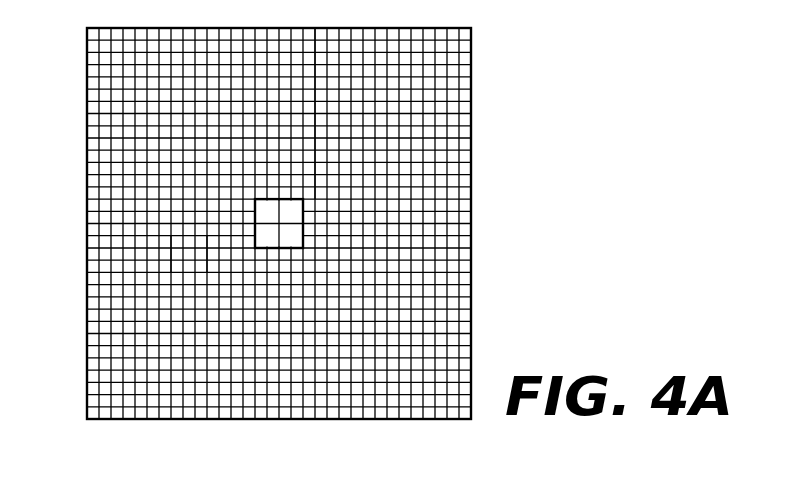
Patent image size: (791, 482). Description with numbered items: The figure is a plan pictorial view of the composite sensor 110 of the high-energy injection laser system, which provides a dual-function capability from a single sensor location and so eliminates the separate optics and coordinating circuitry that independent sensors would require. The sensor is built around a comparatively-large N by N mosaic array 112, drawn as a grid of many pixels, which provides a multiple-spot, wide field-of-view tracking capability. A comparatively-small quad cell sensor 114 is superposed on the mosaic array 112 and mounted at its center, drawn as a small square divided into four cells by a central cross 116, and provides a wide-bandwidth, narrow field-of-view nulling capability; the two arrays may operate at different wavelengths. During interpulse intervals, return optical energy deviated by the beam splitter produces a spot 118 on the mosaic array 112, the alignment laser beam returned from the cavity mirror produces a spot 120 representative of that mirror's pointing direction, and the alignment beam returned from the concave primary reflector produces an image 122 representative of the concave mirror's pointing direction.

The composite sensor 110 is at (283, 234).
The mosaic array 112 is at (87, 362).
The quad cell sensor 114 is at (303, 229).
The central cross line 116 is at (280, 223).
The spot 118 is at (410, 135).
The spot 120 is at (196, 253).
The image 122 is at (319, 198).